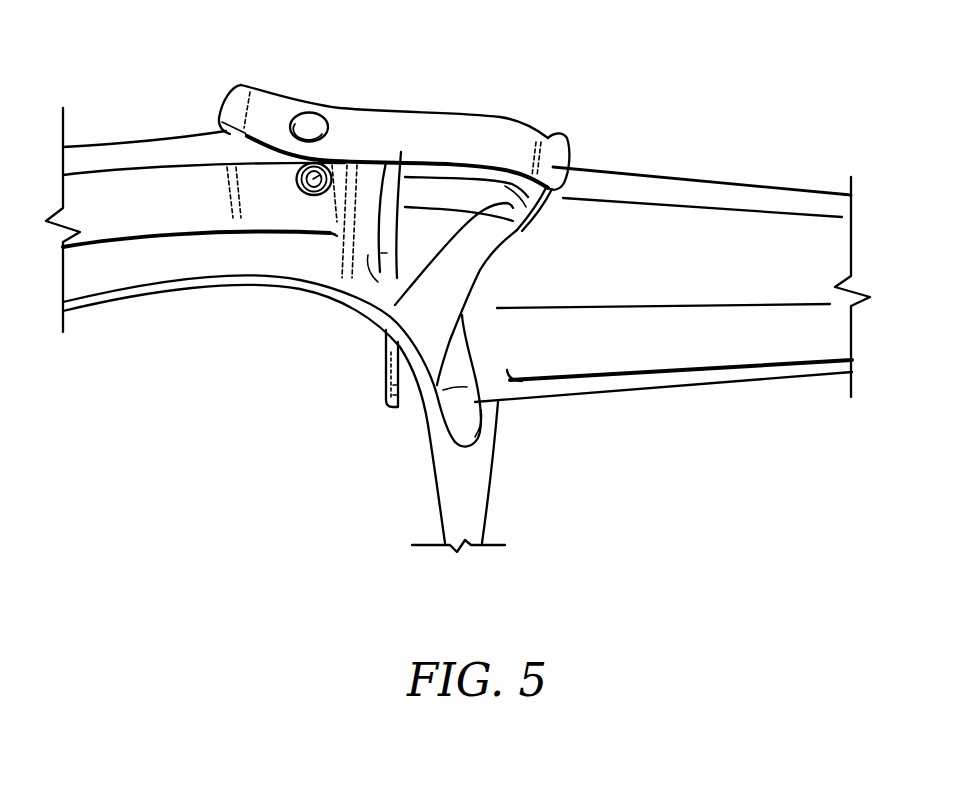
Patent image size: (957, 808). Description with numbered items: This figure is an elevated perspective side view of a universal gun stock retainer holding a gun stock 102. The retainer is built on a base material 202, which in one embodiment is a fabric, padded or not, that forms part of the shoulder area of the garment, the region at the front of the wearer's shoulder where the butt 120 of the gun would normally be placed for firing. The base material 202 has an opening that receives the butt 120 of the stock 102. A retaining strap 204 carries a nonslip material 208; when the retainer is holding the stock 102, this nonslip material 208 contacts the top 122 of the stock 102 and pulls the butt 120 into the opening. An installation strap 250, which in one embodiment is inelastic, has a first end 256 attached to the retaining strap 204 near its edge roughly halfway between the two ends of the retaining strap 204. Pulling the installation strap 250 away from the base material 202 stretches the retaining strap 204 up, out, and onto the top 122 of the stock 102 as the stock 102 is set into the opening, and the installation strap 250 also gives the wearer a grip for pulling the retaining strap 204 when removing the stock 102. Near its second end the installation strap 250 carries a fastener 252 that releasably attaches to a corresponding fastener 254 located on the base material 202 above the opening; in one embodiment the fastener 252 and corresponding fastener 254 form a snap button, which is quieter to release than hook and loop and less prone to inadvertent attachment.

The stock 102 is at (515, 340).
The butt 120 is at (392, 160).
The top 122 is at (622, 170).
The base material 202 is at (422, 370).
The retaining strap 204 is at (412, 312).
The nonslip material 208 is at (412, 311).
The installation strap 250 is at (450, 118).
The fastener 252 is at (308, 128).
The corresponding fastener 254 is at (320, 177).
The first end 256 is at (553, 130).